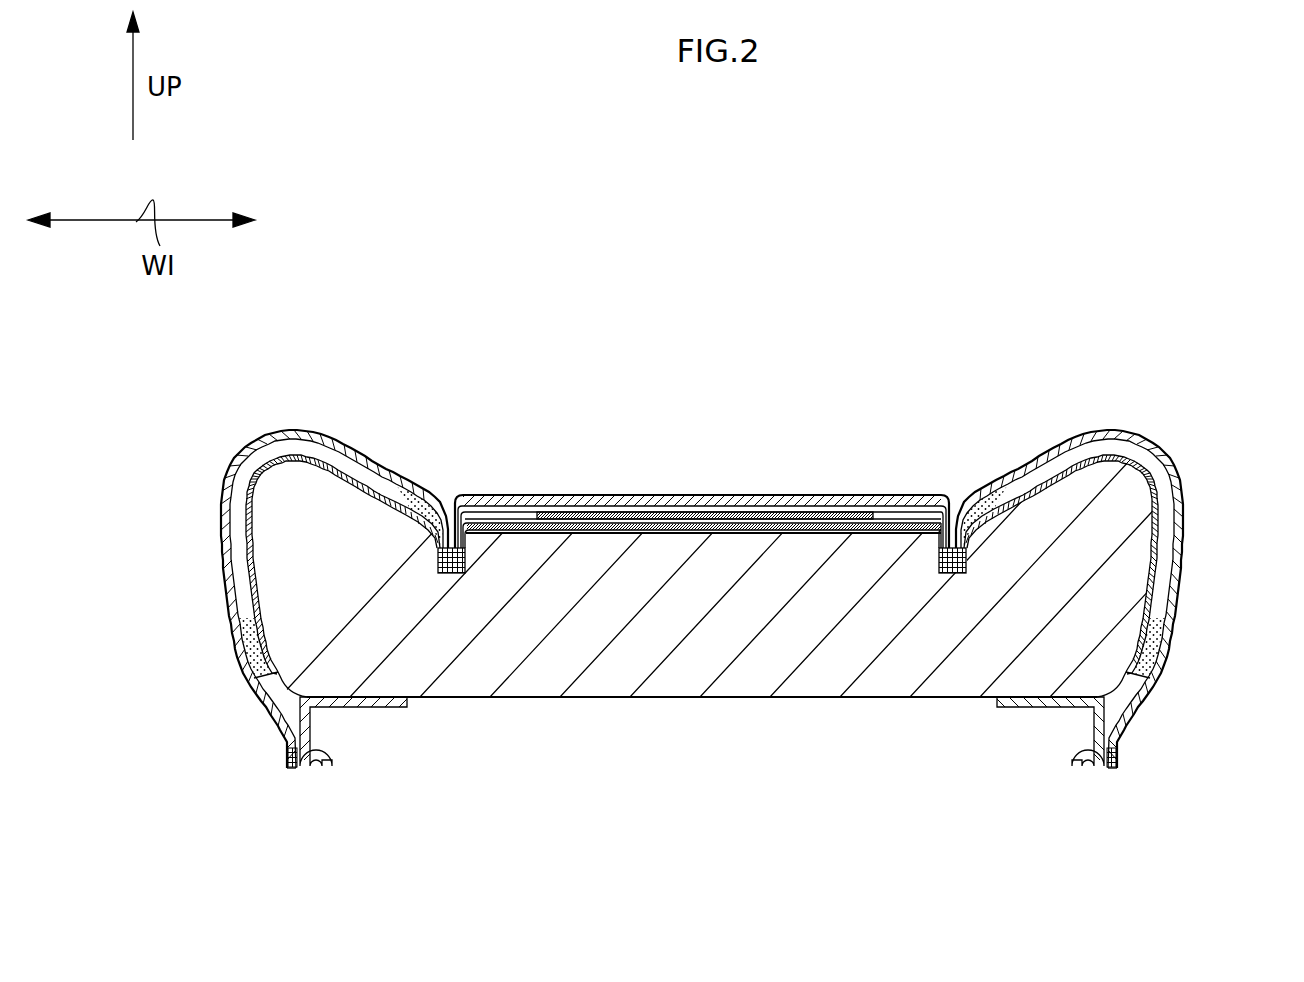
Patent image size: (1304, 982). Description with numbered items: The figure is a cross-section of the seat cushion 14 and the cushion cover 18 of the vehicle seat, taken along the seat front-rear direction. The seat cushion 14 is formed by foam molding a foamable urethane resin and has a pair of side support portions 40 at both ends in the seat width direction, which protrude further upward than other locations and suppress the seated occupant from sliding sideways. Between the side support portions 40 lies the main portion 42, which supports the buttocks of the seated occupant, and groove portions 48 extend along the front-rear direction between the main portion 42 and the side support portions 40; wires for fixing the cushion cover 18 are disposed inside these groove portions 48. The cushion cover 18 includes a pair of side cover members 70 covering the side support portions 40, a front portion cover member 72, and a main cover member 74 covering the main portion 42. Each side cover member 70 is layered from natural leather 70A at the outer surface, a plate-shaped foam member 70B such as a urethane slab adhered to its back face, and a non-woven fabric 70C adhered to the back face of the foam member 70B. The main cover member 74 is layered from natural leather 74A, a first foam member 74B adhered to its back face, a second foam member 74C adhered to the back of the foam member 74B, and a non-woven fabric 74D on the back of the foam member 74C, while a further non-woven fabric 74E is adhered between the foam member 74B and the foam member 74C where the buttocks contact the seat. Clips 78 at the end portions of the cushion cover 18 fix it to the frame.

The seat cushion 14 is at (659, 722).
The cushion cover 18 is at (1208, 383).
The side support portion 40 is at (391, 488).
The main portion 42 is at (890, 516).
The groove portion 48 is at (446, 546).
The side cover member 70 is at (231, 353).
The natural leather 70A is at (360, 443).
The foam member 70B is at (312, 452).
The non-woven fabric 70C is at (287, 482).
The front portion cover member 72 is at (418, 742).
The main cover member 74 is at (877, 412).
The natural leather 74A is at (569, 497).
The foam member 74B is at (622, 508).
The foam member 74C is at (672, 518).
The non-woven fabric 74D is at (708, 530).
The non-woven fabric 74E is at (808, 507).
The clip 78 is at (315, 790).